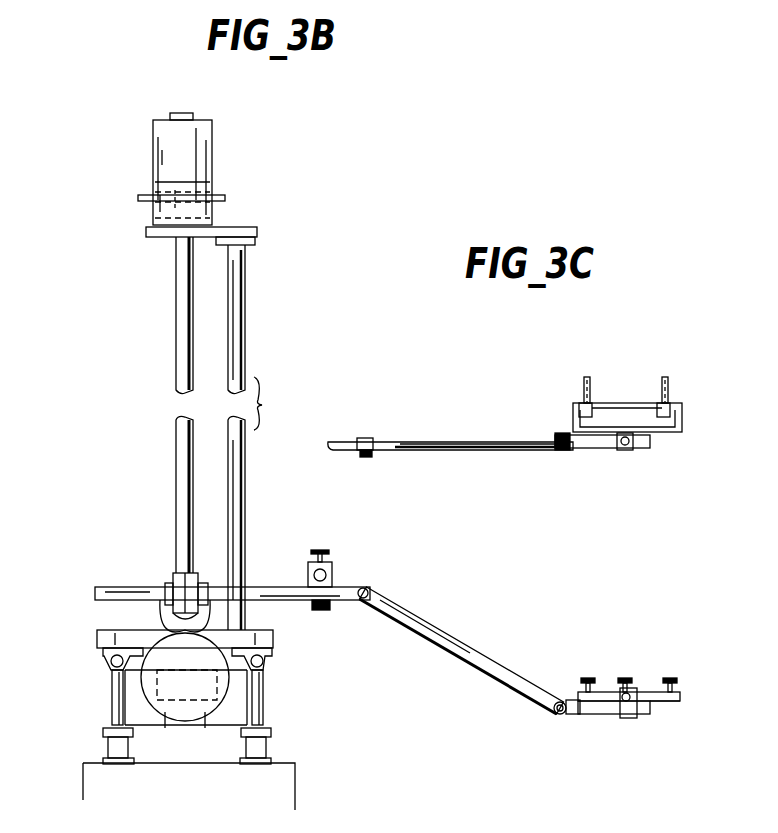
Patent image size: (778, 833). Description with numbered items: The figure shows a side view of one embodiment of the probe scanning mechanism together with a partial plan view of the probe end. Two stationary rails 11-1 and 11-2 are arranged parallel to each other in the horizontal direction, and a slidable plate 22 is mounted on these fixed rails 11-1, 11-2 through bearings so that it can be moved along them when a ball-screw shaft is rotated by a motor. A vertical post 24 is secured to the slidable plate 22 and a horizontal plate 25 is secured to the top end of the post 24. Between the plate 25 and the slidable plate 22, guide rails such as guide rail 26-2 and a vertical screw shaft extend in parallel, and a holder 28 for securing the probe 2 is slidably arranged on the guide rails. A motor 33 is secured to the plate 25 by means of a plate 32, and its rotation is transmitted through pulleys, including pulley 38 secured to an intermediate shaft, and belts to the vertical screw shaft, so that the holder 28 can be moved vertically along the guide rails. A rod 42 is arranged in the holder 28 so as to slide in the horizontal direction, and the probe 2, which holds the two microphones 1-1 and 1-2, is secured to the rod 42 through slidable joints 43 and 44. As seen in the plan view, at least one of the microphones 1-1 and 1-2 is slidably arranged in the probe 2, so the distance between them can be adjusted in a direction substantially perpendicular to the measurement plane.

In FIG. 3B, the motor 33 is at (205, 147).
In FIG. 3B, the pulley 38 is at (225, 198).
In FIG. 3B, the plate 32 is at (158, 208).
In FIG. 3B, the horizontal plate 25 is at (257, 230).
In FIG. 3B, the guide rail 26-2 is at (176, 310).
In FIG. 3B, the vertical post 24 is at (240, 316).
In FIG. 3B, the rod 42 is at (122, 587).
In FIG. 3C, the rod 42 is at (347, 446).
In FIG. 3B, the holder 28 is at (172, 575).
In FIG. 3B, the slidable plate 22 is at (100, 630).
In FIG. 3B, the stationary rail 11-1 is at (112, 672).
In FIG. 3B, the stationary rail 11-2 is at (263, 672).
In FIG. 3B, the slidable joint 43 is at (468, 650).
In FIG. 3C, the slidable joint 43 is at (490, 441).
In FIG. 3B, the slidable joint 44 is at (603, 714).
In FIG. 3C, the slidable joint 44 is at (605, 450).
In FIG. 3B, the probe 2 is at (688, 686).
In FIG. 3C, the probe 2 is at (690, 414).
In FIG. 3C, the microphone 1-1 is at (583, 382).
In FIG. 3C, the microphone 1-2 is at (668, 387).